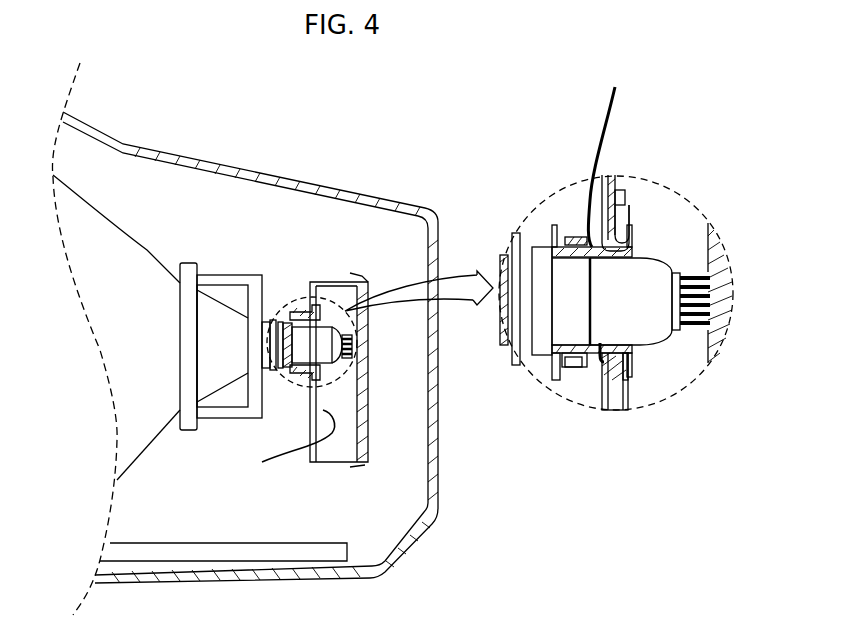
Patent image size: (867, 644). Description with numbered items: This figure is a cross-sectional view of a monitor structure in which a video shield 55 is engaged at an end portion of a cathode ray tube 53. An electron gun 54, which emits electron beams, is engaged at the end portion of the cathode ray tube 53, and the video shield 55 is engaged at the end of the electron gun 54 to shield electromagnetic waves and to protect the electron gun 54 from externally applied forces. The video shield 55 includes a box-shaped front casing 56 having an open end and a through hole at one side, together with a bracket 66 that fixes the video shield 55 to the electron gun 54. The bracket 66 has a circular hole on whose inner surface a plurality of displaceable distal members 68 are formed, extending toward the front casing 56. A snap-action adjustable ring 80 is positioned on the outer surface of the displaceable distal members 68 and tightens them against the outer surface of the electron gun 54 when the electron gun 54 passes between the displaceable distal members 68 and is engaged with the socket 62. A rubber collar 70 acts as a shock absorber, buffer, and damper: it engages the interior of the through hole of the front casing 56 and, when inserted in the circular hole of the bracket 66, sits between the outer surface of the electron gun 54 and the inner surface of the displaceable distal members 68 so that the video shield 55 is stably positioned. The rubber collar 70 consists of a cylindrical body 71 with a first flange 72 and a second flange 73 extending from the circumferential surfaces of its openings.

The cathode ray tube 53 is at (142, 252).
The electron gun 54 is at (327, 337).
The video shield 55 is at (378, 266).
The front casing 56 is at (325, 460).
The socket 62 is at (702, 260).
The bracket 66 is at (270, 460).
The displaceable distal member 68 is at (618, 153).
The rubber collar 70 is at (630, 240).
The cylindrical body 71 is at (600, 348).
The first flange 72 is at (633, 370).
The second flange 73 is at (560, 377).
The snap-action adjustable ring 80 is at (577, 235).